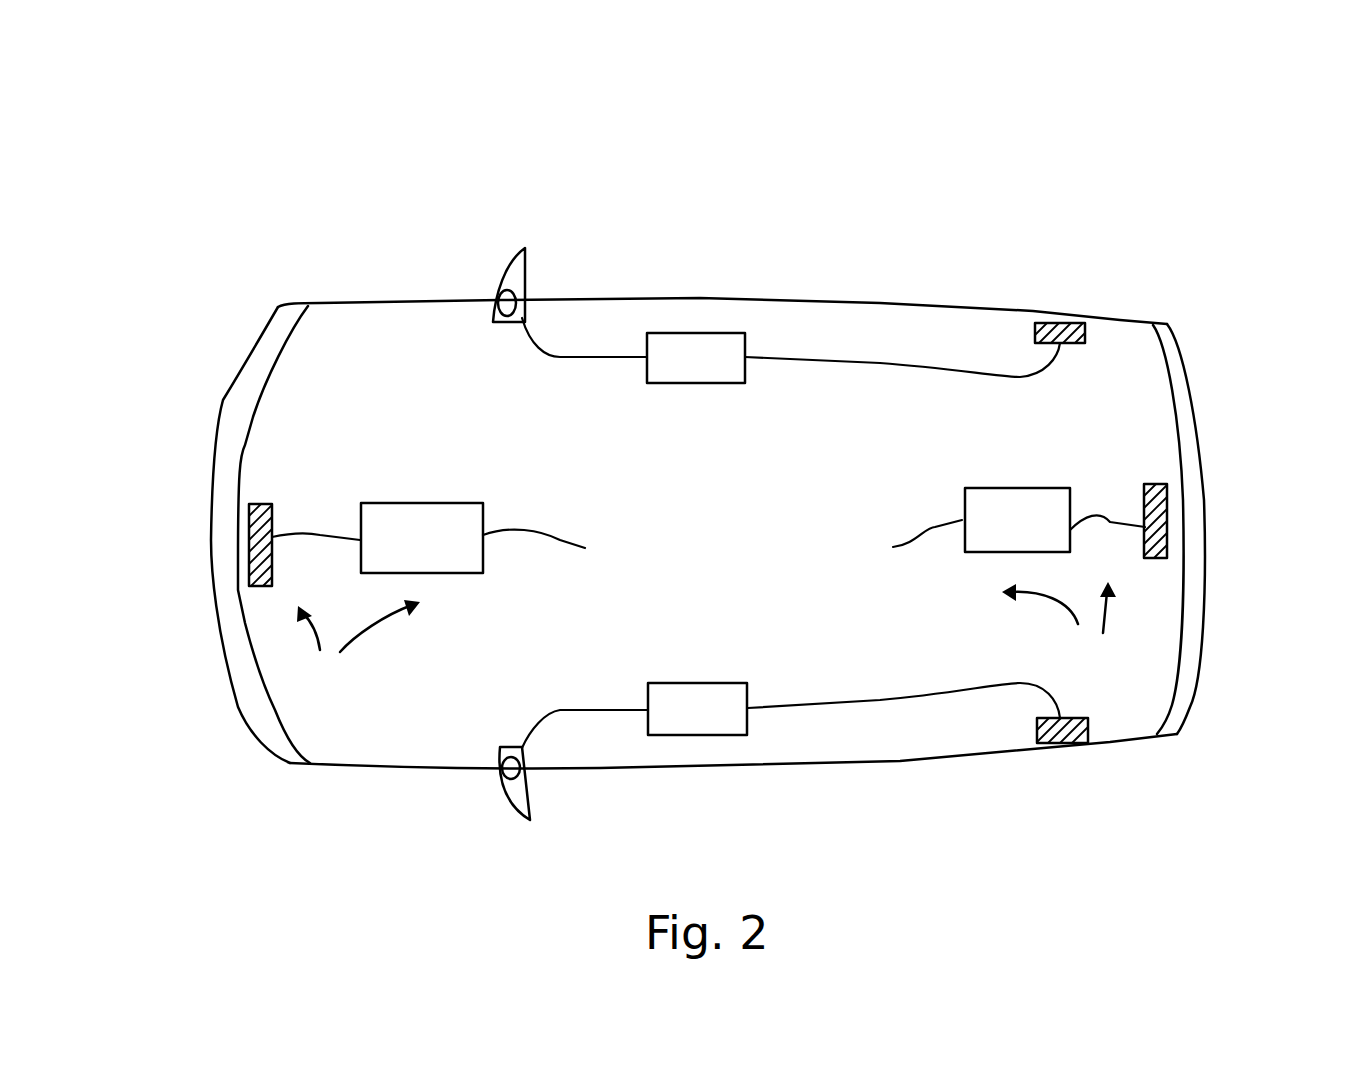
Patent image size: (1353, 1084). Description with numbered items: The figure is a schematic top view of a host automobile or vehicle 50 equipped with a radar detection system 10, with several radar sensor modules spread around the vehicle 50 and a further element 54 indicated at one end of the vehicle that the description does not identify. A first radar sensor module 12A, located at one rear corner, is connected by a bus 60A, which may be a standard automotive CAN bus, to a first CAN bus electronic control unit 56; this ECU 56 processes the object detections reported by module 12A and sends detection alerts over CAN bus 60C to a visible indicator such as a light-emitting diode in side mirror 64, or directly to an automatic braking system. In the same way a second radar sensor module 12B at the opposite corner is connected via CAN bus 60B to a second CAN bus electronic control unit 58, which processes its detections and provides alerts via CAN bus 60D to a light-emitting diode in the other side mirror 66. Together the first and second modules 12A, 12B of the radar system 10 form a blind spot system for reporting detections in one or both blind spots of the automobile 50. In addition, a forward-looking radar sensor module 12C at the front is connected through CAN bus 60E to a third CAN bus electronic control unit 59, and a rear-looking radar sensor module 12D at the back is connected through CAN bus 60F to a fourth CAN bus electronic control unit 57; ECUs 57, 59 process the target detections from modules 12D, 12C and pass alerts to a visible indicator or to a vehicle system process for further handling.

The vehicle 50 is at (368, 171).
The vehicle body 54 is at (1198, 527).
The detection system 10 is at (711, 644).
The first radar sensor module 12A is at (1097, 747).
The second radar sensor module 12B is at (1080, 318).
The forward-looking radar sensor module 12C is at (262, 565).
The rear-looking radar sensor module 12D is at (1167, 540).
The first CAN bus electronic control unit 56 is at (707, 697).
The fourth CAN bus electronic control unit 57 is at (987, 531).
The second CAN bus electronic control unit 58 is at (700, 368).
The third CAN bus electronic control unit 59 is at (501, 538).
The bus 60A is at (900, 703).
The CAN bus 60B is at (940, 368).
The CAN bus 60C is at (563, 712).
The CAN bus 60D is at (597, 358).
The CAN bus 60E is at (308, 532).
The CAN bus 60F is at (1098, 525).
The side mirror 64 is at (503, 807).
The side mirror 66 is at (533, 260).